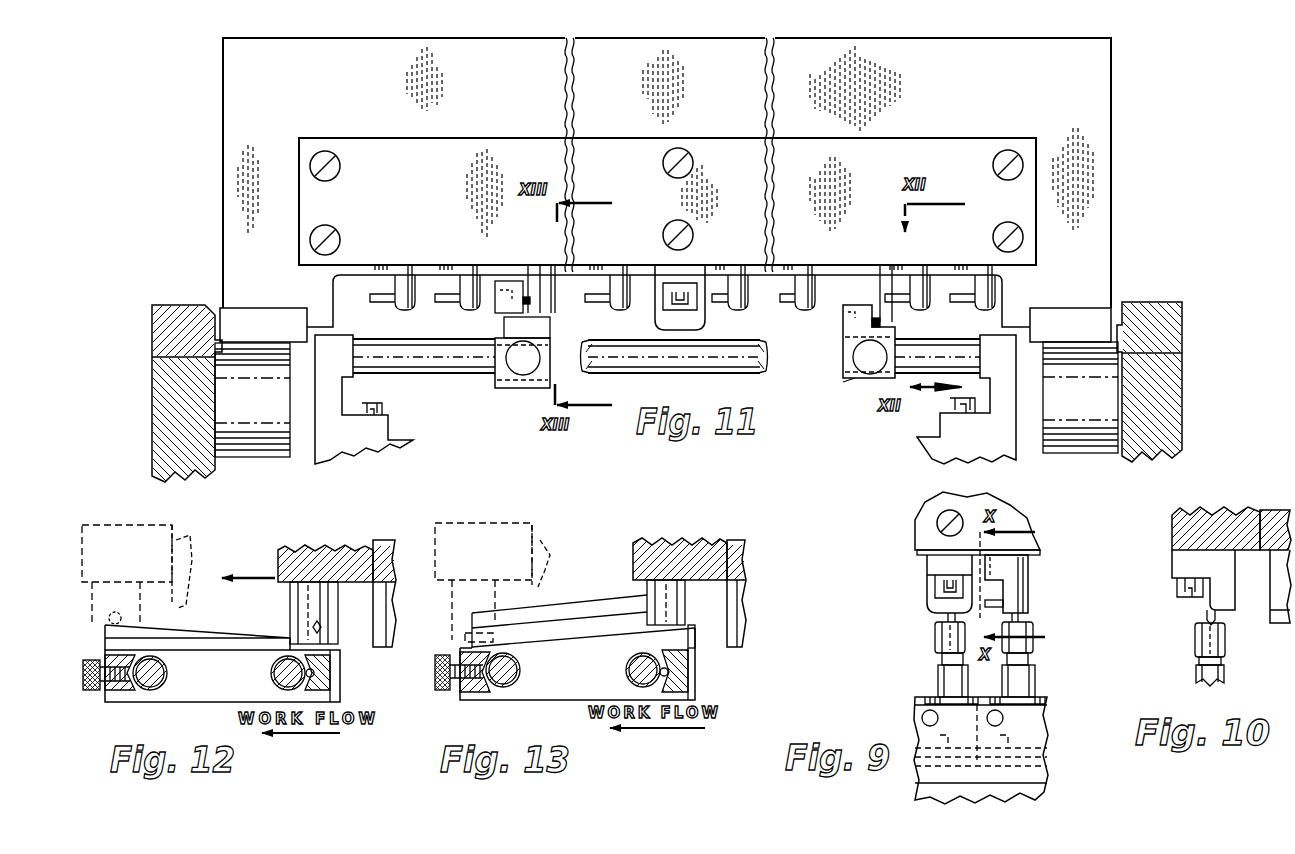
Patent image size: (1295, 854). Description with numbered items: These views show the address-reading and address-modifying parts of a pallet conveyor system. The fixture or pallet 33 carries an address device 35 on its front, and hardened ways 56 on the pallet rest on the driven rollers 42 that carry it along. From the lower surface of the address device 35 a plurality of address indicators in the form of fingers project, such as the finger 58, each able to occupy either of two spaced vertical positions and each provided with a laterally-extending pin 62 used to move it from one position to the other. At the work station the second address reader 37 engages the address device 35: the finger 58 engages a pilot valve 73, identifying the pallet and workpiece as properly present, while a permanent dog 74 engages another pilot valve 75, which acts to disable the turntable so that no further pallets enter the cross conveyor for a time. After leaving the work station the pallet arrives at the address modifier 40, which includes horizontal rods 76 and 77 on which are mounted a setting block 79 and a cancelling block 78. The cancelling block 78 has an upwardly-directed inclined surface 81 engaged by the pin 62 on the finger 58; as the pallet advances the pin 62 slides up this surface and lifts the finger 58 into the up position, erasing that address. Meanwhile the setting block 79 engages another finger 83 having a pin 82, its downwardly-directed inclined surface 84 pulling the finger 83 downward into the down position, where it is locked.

In FIG. 11, the fixture or pallet 33 is at (1112, 252).
In FIG. 12, the fixture or pallet 33 is at (197, 550).
In FIG. 13, the fixture or pallet 33 is at (543, 562).
In FIG. 9, the fixture or pallet 33 is at (920, 560).
In FIG. 10, the fixture or pallet 33 is at (1280, 618).
In FIG. 11, the address device 35 is at (337, 138).
In FIG. 12, the address device 35 is at (82, 528).
In FIG. 13, the address device 35 is at (500, 523).
In FIG. 9, the address device 35 is at (925, 509).
In FIG. 10, the address device 35 is at (1172, 522).
In FIG. 9, the second address reader 37 is at (1048, 780).
In FIG. 11, the address modifier 40 is at (390, 430).
In FIG. 11, the driven rollers 42 is at (260, 440).
In FIG. 11, the hardened ways 56 is at (268, 320).
In FIG. 11, the finger 58 is at (884, 320).
In FIG. 12, the finger 58 is at (293, 600).
In FIG. 9, the finger 58 is at (1030, 583).
In FIG. 11, the laterally-extending pin 62 is at (846, 312).
In FIG. 12, the laterally-extending pin 62 is at (322, 628).
In FIG. 9, the pilot valve 73 is at (1036, 676).
In FIG. 11, the permanent dog 74 is at (665, 272).
In FIG. 9, the permanent dog 74 is at (930, 602).
In FIG. 10, the permanent dog 74 is at (1172, 566).
In FIG. 9, the pilot valve 75 is at (936, 640).
In FIG. 10, the pilot valve 75 is at (1195, 643).
In FIG. 12, the horizontal rod 76 is at (275, 676).
In FIG. 13, the horizontal rod 76 is at (627, 676).
In FIG. 11, the horizontal rod 77 is at (448, 346).
In FIG. 12, the horizontal rod 77 is at (167, 673).
In FIG. 13, the horizontal rod 77 is at (521, 670).
In FIG. 11, the cancelling block 78 is at (845, 382).
In FIG. 12, the cancelling block 78 is at (105, 645).
In FIG. 13, the cancelling block 78 is at (577, 664).
In FIG. 11, the setting block 79 is at (497, 380).
In FIG. 13, the setting block 79 is at (612, 620).
In FIG. 12, the upwardly-directed inclined surface 81 is at (200, 628).
In FIG. 11, the pin 82 is at (512, 302).
In FIG. 13, the pin 82 is at (692, 633).
In FIG. 11, the finger 83 is at (548, 291).
In FIG. 13, the finger 83 is at (672, 592).
In FIG. 13, the downwardly-directed inclined surface 84 is at (572, 618).